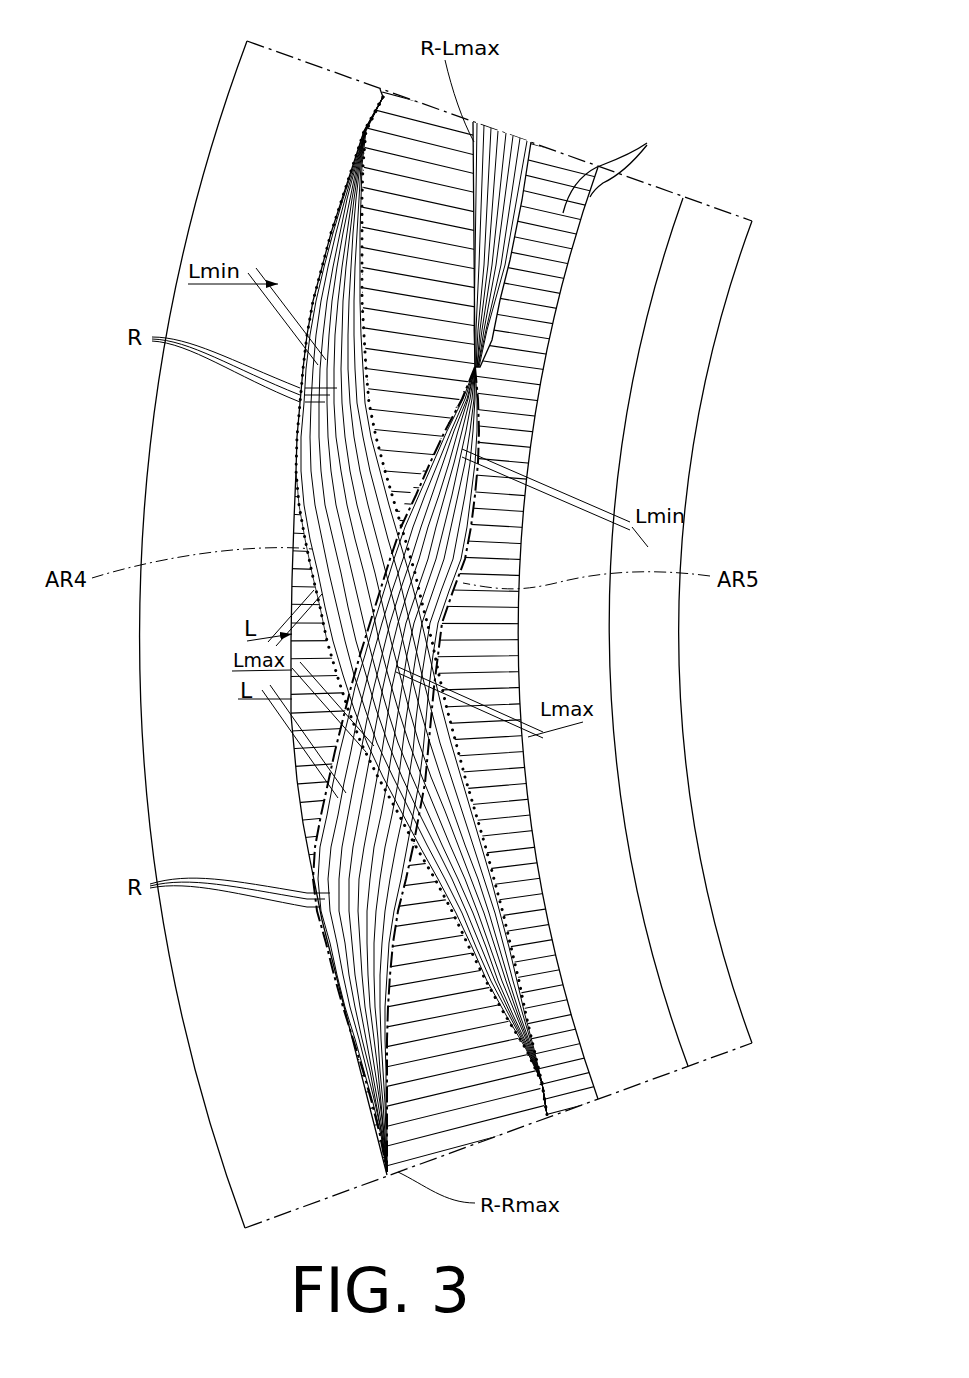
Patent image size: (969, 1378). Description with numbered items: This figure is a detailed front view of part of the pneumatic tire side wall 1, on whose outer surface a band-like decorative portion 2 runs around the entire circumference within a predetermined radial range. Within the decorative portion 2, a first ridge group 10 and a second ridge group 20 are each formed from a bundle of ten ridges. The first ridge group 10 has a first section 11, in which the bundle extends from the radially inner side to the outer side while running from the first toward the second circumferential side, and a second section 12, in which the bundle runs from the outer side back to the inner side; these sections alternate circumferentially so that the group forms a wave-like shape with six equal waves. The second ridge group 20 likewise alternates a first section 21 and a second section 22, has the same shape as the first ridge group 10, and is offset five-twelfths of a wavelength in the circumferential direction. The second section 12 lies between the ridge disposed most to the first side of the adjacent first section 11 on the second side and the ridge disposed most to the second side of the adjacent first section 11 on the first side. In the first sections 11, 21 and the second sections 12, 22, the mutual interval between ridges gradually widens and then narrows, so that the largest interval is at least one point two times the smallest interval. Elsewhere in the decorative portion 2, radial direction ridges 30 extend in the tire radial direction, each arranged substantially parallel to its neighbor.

The side wall 1 is at (297, 207).
The decorative portion 2 is at (532, 790).
The first ridge group 10 is at (500, 338).
The first section of the first ridge group 11 is at (510, 157).
The second section of the first ridge group 12 is at (345, 823).
The second ridge group 20 is at (306, 520).
The first section of the second ridge group 21 is at (327, 467).
The second section of the second ridge group 22 is at (381, 97).
The radial direction ridges 30 is at (615, 165).